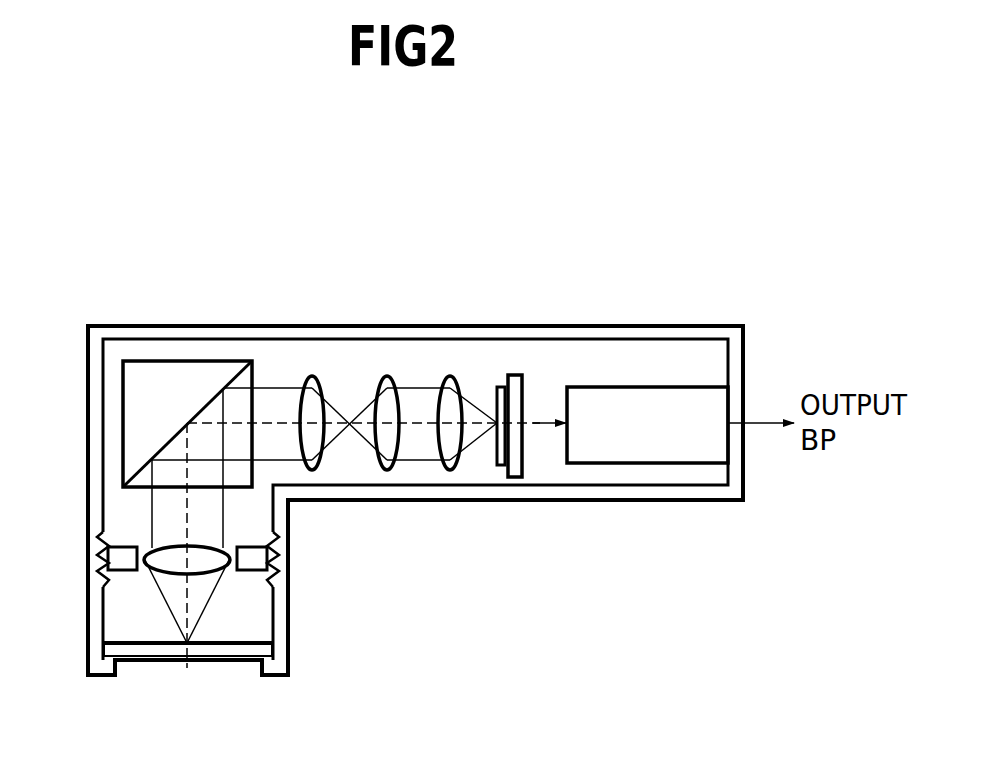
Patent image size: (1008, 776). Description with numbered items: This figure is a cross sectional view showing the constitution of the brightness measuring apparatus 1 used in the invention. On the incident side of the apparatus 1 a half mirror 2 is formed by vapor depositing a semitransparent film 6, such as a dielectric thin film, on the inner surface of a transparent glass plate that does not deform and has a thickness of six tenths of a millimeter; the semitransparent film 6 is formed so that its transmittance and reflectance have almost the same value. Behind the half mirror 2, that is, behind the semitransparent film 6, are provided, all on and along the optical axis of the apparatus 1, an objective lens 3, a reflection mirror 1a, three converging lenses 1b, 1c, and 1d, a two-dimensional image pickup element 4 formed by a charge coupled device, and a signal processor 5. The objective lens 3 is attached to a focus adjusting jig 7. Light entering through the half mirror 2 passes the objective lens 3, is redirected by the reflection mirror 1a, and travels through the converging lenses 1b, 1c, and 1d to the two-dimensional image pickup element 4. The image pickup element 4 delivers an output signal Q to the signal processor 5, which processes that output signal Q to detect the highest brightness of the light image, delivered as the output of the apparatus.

The brightness measuring apparatus 1 is at (147, 241).
The reflection mirror 1a is at (197, 372).
The converging lens 1b is at (312, 377).
The converging lens 1c is at (387, 377).
The converging lens 1d is at (450, 377).
The half mirror 2 is at (222, 652).
The objective lens 3 is at (168, 547).
The two-dimensional image pickup element 4 is at (503, 385).
The signal processor 5 is at (644, 387).
The semitransparent film 6 is at (248, 643).
The focus adjusting jig 7 is at (252, 560).
The output signal Q is at (535, 420).